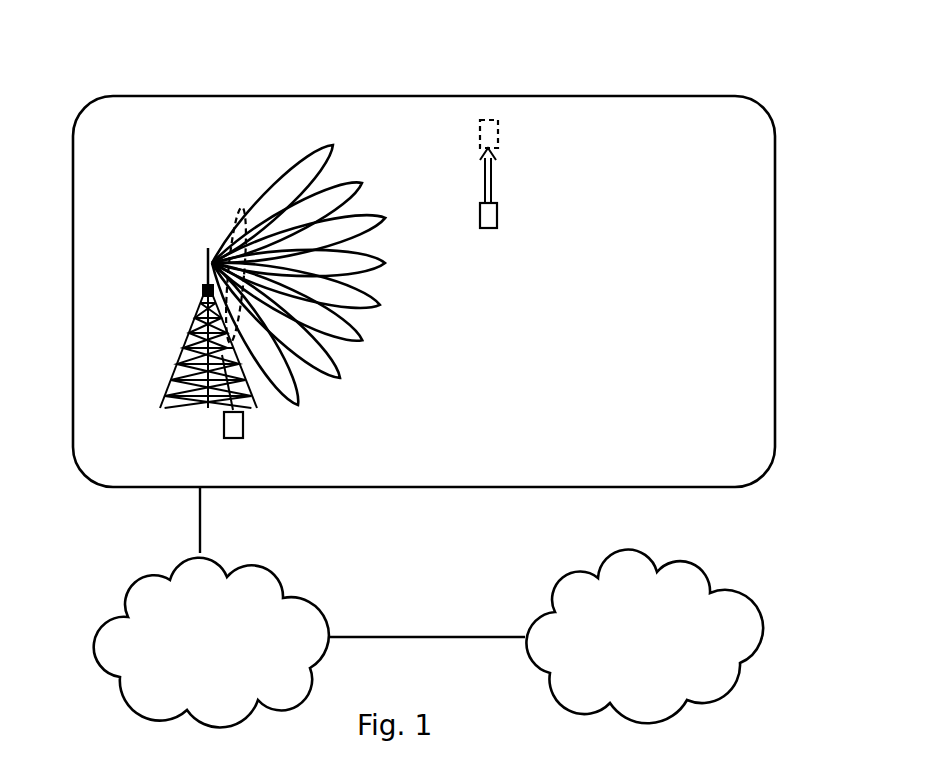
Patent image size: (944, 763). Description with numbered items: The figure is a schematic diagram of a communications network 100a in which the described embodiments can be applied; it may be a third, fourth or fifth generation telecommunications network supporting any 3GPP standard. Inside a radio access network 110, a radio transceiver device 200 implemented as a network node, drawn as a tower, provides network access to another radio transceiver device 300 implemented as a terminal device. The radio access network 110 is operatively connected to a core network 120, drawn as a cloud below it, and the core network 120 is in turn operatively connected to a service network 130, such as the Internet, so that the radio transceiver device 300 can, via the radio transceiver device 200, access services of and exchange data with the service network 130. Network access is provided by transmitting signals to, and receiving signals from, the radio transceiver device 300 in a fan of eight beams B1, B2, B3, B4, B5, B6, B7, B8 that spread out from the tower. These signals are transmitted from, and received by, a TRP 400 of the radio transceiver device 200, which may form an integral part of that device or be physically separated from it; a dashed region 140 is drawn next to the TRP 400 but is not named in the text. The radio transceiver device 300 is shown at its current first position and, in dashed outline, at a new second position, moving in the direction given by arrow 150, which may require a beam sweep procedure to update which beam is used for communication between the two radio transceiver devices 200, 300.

The communications network 100a is at (162, 74).
The radio access network 110 is at (148, 140).
The core network 120 is at (239, 659).
The service network 130 is at (667, 656).
The antenna array beam pattern 140 is at (234, 206).
The arrow 150 is at (492, 178).
The radio transceiver device 200 is at (224, 432).
The radio transceiver device 300 is at (498, 122).
The TRP 400 is at (206, 270).
The beam B1 is at (291, 203).
The beam B2 is at (302, 222).
The beam B3 is at (315, 240).
The beam B4 is at (317, 265).
The beam B5 is at (315, 287).
The beam B6 is at (303, 309).
The beam B7 is at (288, 327).
The beam B8 is at (264, 345).